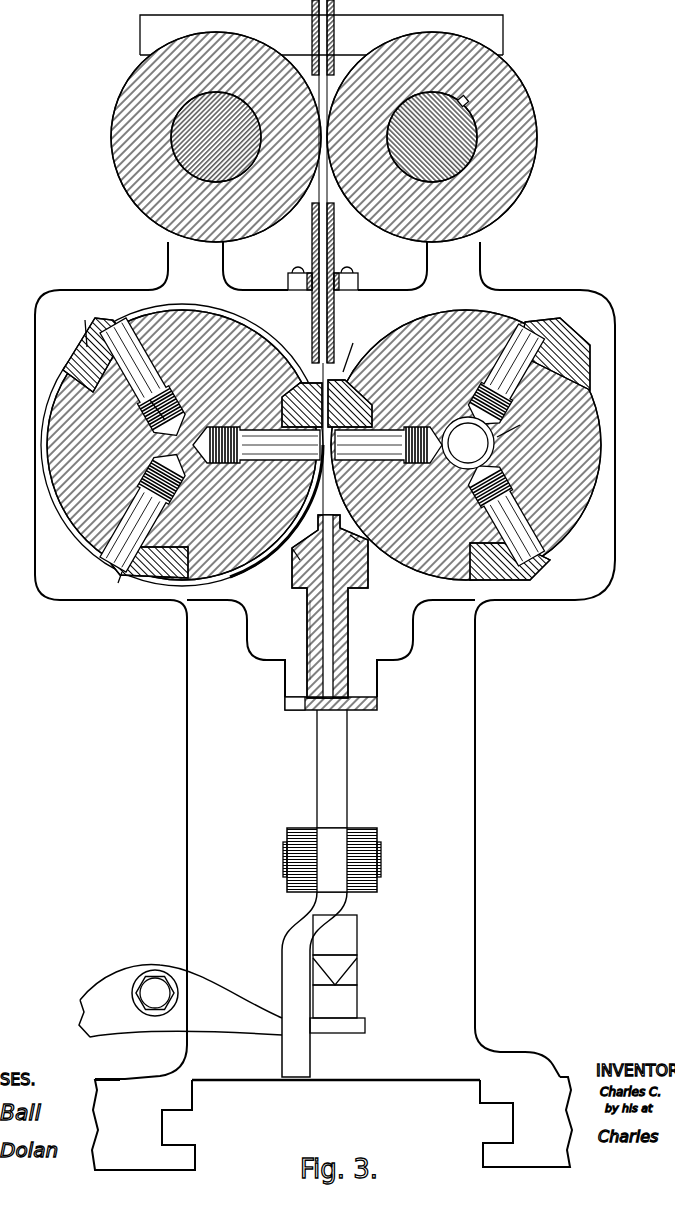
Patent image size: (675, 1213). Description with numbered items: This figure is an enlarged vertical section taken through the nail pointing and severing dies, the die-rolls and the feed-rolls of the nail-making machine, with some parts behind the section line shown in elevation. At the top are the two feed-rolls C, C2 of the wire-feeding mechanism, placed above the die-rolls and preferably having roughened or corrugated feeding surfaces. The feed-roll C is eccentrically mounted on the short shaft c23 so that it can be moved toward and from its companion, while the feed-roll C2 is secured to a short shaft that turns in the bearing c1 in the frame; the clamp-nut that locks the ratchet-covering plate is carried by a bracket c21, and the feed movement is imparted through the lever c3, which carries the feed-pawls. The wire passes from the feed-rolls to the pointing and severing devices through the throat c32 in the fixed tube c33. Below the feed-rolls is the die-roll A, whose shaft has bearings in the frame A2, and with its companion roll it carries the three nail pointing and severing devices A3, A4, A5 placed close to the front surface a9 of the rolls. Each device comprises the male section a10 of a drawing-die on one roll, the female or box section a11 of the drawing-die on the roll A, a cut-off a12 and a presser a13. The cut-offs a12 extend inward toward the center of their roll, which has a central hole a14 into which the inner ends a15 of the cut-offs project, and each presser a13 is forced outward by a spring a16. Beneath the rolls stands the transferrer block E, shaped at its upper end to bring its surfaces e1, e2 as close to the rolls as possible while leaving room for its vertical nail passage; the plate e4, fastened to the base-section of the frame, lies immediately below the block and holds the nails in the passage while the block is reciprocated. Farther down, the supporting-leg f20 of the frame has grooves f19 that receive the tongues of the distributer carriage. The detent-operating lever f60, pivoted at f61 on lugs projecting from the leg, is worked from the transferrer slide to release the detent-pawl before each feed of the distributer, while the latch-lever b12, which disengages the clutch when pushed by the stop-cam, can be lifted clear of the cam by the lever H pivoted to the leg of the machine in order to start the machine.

The feed-roll C is at (305, 55).
The feed-roll C2 is at (360, 53).
The bearing c1 is at (473, 133).
The short shaft c23 is at (177, 143).
The bracket c21 is at (335, 10).
The throat c32 is at (312, 243).
The fixed tube c33 is at (335, 243).
The lever c3 is at (313, 587).
The roll A is at (188, 308).
The frame A2 is at (452, 312).
The nail pointing and severing device A3 is at (293, 387).
The nail pointing and severing device A4 is at (523, 583).
The nail pointing and severing device A5 is at (583, 332).
The front surface of the rolls a9 is at (256, 445).
The male section of drawing-die a10 is at (487, 582).
The female or box section of drawing-die a11 is at (104, 451).
The cut-off a12 is at (572, 548).
The presser a13 is at (130, 350).
The central hole a14 is at (497, 437).
The inner ends of the cut-offs a15 is at (437, 443).
The spring a16 is at (147, 410).
The block E is at (367, 575).
The surface of block e1 is at (292, 545).
The surface of block e2 is at (357, 533).
The plate e4 is at (310, 703).
The supporting-leg f20 is at (389, 781).
The pivot f61 is at (380, 852).
The detent-operating lever f60 is at (314, 984).
The latch-lever b12 is at (313, 1013).
The lever H is at (180, 1001).
The grooves f19 is at (162, 1130).